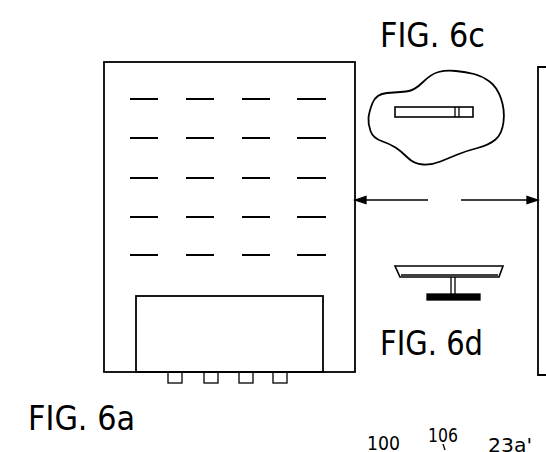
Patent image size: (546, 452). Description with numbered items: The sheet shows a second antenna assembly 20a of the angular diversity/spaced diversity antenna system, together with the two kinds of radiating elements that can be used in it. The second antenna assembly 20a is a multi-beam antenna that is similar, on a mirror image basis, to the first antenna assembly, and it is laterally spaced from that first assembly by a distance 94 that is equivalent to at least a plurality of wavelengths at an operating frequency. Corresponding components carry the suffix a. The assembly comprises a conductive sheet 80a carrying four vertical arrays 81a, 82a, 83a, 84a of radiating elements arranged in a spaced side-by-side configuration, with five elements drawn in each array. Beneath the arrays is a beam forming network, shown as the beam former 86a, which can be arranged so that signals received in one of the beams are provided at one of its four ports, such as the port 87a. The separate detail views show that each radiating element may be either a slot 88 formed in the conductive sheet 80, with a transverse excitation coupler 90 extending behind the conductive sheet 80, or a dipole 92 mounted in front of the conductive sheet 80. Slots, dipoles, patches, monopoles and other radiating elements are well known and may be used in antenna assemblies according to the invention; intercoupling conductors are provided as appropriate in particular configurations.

In FIG. 6A, the second antenna assembly 20a is at (77, 99).
In FIG. 6A, the conductive sheet 80a is at (113, 160).
In FIG. 6A, the vertical array of radiating elements 81a is at (143, 99).
In FIG. 6A, the vertical array of radiating elements 82a is at (203, 99).
In FIG. 6A, the vertical array of radiating elements 83a is at (262, 99).
In FIG. 6A, the vertical array of radiating elements 84a is at (321, 99).
In FIG. 6A, the beam former 86a is at (136, 330).
In FIG. 6A, the port 87a is at (174, 383).
In FIG. 6C, the conductive sheet 80 is at (462, 153).
In FIG. 6D, the conductive sheet 80 is at (427, 265).
In FIG. 6C, the slot 88 is at (413, 118).
In FIG. 6C, the transverse excitation coupler 90 is at (460, 108).
In FIG. 6D, the dipole 92 is at (428, 297).
In FIG. 6C, the distance 94 is at (446, 201).